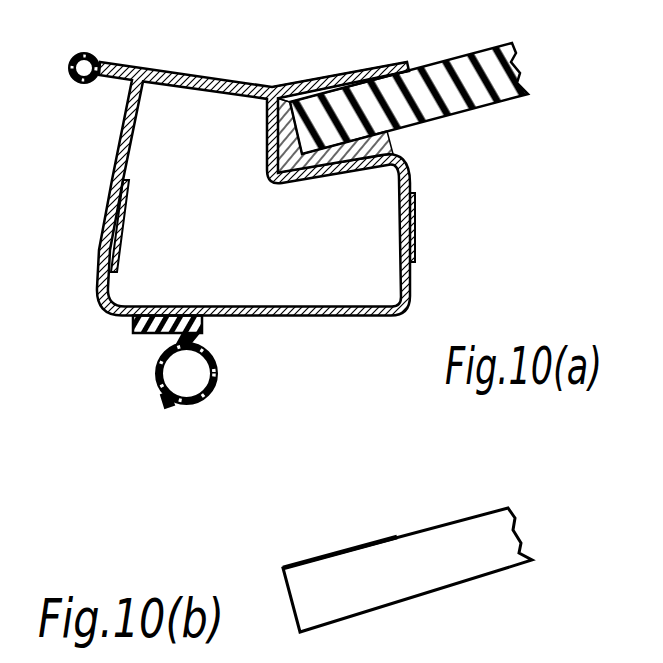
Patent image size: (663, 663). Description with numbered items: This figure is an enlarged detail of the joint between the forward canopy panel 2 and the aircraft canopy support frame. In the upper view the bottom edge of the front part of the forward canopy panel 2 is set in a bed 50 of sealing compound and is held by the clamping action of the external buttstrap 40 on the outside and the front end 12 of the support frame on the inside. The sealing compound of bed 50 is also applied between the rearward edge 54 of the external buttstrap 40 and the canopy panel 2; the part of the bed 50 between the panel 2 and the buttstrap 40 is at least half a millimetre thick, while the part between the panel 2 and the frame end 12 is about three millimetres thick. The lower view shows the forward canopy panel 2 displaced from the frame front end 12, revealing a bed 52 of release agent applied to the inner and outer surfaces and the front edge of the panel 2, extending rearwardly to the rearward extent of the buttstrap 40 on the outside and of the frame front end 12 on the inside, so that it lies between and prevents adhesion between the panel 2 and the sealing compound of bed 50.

In FIG. 10A, the forward canopy panel 2 is at (477, 102).
In FIG. 10B, the forward canopy panel 2 is at (468, 573).
In FIG. 10A, the front end member of the support frame 12 is at (328, 184).
In FIG. 10A, the buttstrap 40 is at (353, 72).
In FIG. 10A, the bed of sealing compound 50 is at (393, 145).
In FIG. 10B, the bed of release agent 52 is at (342, 553).
In FIG. 10A, the rearward edge of the external buttstrap 54 is at (407, 63).